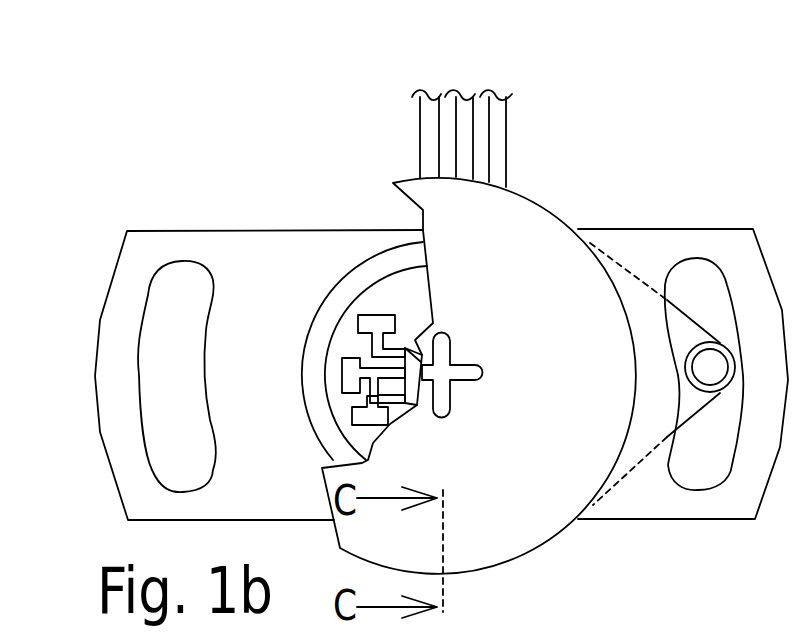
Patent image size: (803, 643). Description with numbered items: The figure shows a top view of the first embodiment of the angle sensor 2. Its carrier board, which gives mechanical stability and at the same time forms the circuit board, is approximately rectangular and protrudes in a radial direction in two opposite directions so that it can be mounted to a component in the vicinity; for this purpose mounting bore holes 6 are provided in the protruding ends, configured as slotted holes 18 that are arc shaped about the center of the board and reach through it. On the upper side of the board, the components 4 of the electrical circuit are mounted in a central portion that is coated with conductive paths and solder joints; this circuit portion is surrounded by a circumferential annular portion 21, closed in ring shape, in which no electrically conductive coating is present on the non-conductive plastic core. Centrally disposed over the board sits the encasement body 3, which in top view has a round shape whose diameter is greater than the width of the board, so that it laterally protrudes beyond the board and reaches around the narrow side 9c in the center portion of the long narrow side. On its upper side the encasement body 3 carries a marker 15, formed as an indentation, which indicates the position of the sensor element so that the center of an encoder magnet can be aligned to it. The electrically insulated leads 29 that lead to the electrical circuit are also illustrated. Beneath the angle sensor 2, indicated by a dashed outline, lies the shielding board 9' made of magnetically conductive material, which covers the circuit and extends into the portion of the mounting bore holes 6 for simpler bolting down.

The angle sensor 2 is at (95, 213).
The circumferential annular portion 21 is at (318, 347).
The encasement body 3 is at (417, 192).
The components 4 is at (352, 367).
The marker 15 is at (444, 333).
The electrically insulated leads 29 is at (497, 118).
The narrow side 9c is at (623, 195).
The shielding board 9' is at (628, 420).
The mounting bore holes 6 is at (713, 282).
The slotted holes 18 is at (713, 282).